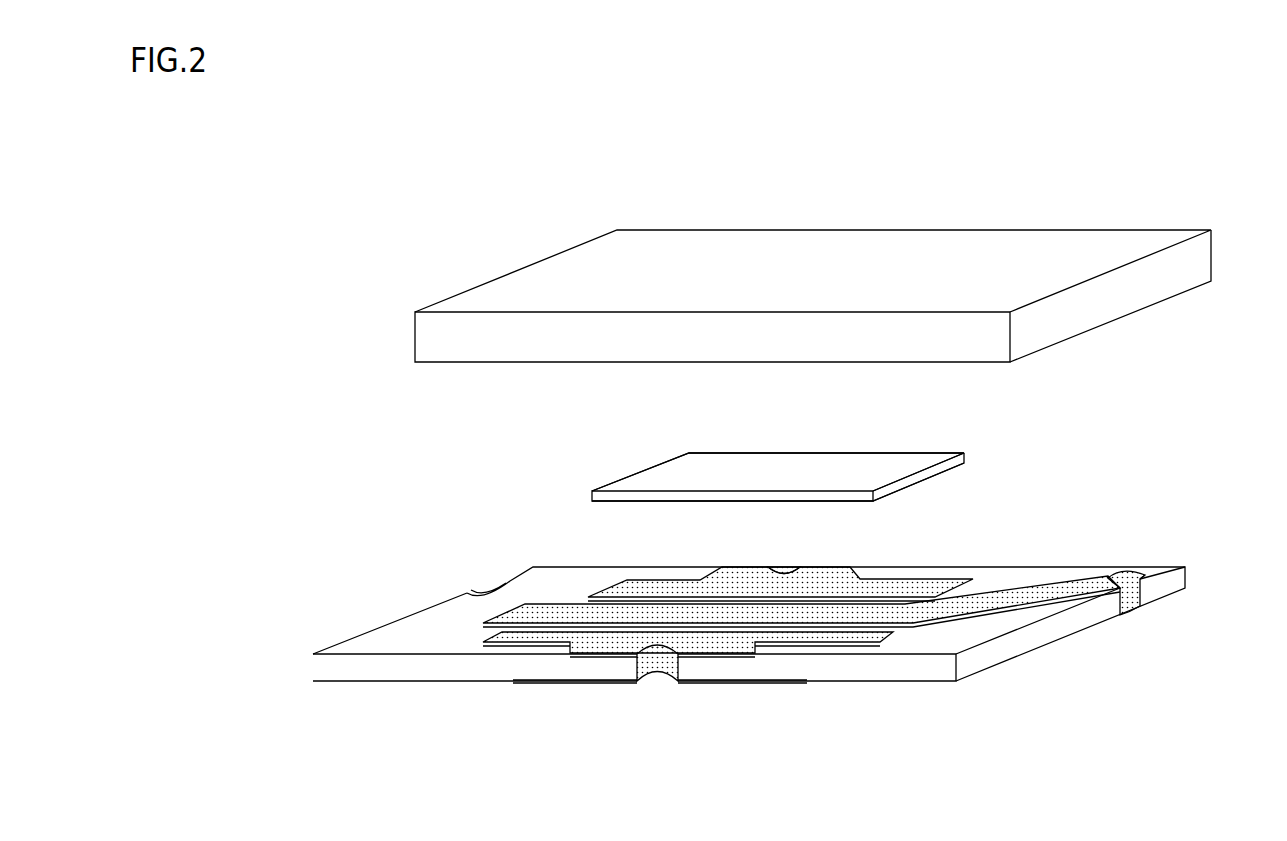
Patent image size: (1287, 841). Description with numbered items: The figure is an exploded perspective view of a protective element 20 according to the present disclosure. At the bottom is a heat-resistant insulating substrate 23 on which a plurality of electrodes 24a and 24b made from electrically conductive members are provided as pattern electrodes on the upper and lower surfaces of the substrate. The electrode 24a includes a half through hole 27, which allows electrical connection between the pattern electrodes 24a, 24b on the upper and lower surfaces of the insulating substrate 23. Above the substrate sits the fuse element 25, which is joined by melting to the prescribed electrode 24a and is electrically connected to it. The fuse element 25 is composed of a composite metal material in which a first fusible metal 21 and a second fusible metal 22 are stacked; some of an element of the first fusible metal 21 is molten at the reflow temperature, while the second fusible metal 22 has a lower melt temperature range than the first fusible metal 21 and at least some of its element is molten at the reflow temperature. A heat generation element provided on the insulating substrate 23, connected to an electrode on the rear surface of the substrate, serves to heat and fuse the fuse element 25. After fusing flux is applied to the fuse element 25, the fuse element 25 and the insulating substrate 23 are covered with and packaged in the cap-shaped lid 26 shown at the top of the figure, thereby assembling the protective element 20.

The protective element 20 is at (441, 270).
The first fusible metal 21 is at (689, 472).
The second fusible metal 22 is at (613, 504).
The insulating substrate 23 is at (363, 668).
The electrode 24a is at (908, 586).
The electrode 24b is at (472, 594).
The fuse element 25 is at (786, 482).
The cap-shaped lid 26 is at (809, 282).
The half through hole 27 is at (502, 583).